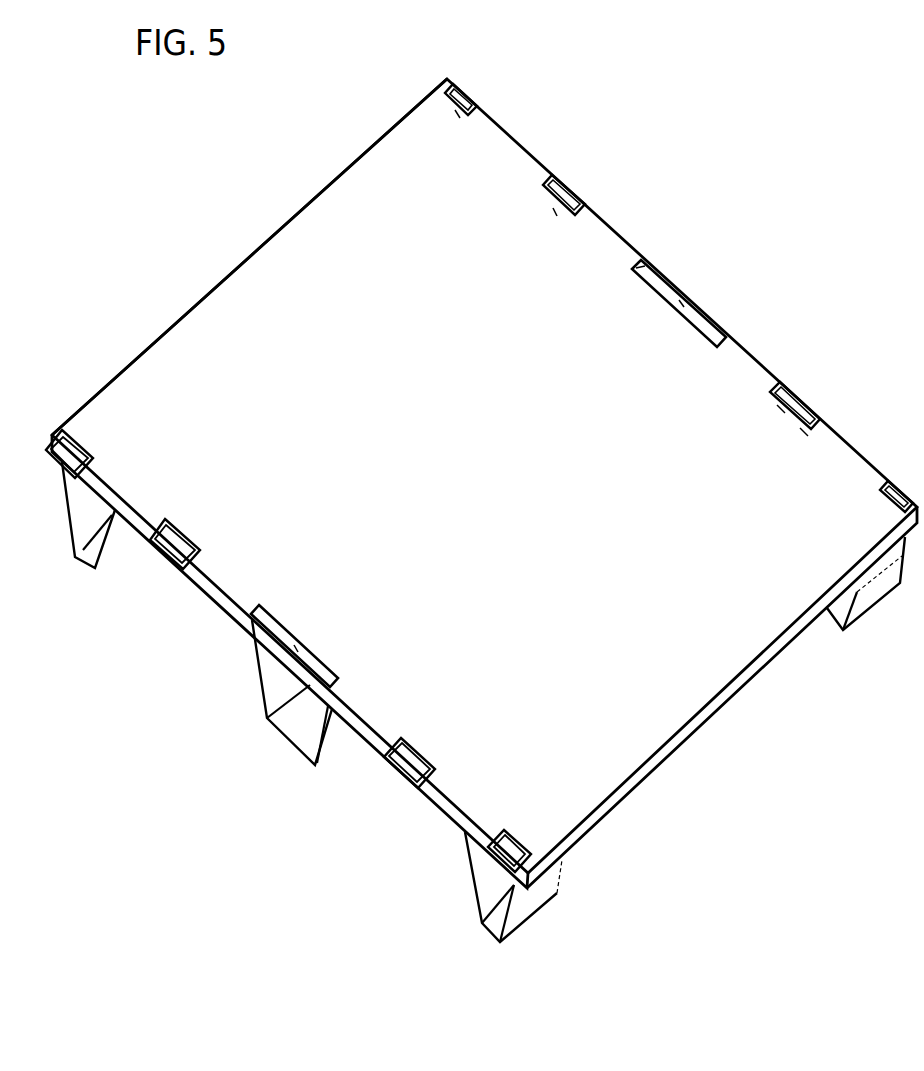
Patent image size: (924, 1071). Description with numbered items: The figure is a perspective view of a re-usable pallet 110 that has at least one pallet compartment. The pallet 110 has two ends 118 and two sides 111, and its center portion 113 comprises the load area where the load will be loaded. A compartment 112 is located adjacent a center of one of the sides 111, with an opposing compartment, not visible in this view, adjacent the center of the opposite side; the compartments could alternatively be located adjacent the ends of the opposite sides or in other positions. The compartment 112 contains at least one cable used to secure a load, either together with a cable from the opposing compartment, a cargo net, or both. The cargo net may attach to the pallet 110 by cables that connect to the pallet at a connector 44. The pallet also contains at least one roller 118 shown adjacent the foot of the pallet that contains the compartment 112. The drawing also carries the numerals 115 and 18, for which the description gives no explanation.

The pallet 110 is at (452, 79).
The top deck 113 is at (453, 463).
The side edge of deck 118 is at (272, 237).
The front side wall 111 is at (207, 588).
The support leg 112 is at (255, 678).
The corner support leg 115 is at (483, 867).
The attachment block 18 is at (663, 273).
The clip 44 is at (158, 553).